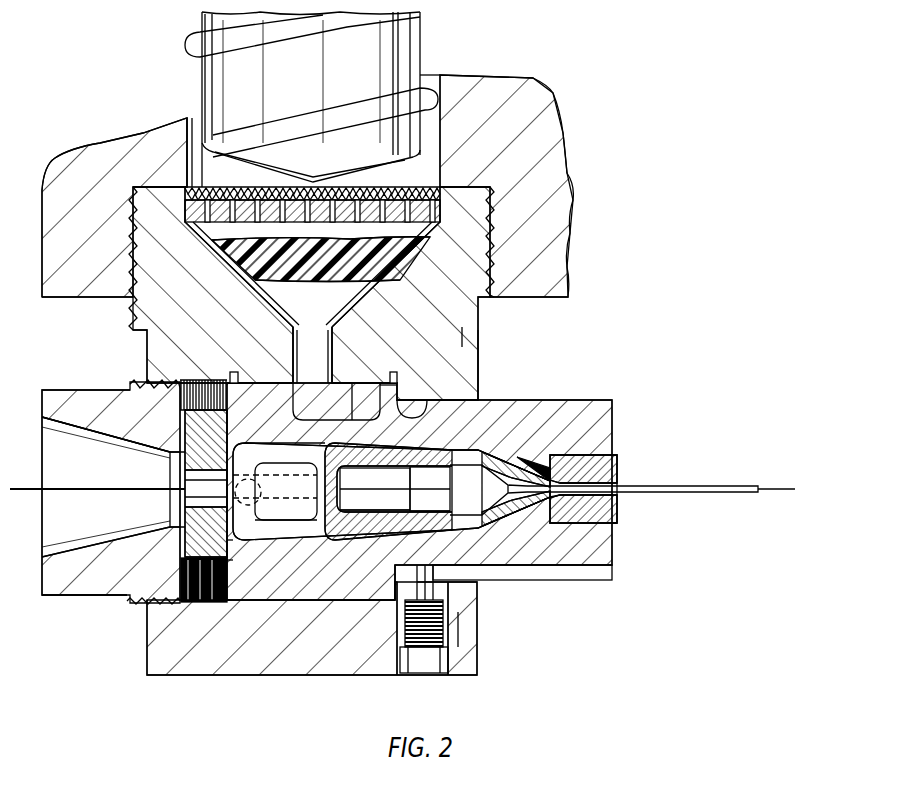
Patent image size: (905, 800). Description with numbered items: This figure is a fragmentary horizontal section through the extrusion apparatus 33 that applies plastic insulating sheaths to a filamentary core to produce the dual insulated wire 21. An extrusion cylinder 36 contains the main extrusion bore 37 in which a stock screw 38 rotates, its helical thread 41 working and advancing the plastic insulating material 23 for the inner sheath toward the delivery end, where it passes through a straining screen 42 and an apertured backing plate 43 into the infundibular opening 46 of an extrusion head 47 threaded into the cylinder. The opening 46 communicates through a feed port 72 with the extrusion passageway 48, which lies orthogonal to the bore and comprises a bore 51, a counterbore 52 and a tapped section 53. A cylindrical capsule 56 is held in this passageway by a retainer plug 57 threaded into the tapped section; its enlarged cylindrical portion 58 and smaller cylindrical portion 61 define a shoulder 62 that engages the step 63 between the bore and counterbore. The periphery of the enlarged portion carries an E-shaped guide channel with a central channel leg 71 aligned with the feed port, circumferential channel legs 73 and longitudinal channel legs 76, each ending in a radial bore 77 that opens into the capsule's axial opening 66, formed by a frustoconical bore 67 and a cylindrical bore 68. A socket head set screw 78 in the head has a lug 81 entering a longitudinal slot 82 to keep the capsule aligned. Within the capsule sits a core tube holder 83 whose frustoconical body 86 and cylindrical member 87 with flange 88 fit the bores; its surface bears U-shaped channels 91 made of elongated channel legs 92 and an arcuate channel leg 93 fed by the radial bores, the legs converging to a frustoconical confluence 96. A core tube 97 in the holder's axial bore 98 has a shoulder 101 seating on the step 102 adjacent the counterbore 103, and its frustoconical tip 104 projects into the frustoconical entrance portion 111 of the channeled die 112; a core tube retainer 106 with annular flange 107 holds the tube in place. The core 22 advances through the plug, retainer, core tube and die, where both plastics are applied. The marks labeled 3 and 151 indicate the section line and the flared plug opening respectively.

The dual insulated wire 21 is at (700, 484).
The filamentary conductive core 22 is at (53, 487).
The plastic insulating material for the inner sheath 23 is at (432, 240).
The section line 3 is at (466, 340).
The extrusion apparatus 33 is at (113, 673).
The extrusion cylinder 36 is at (141, 132).
The main extrusion bore 37 is at (190, 112).
The stock screw 38 is at (420, 37).
The helical thread 41 is at (190, 42).
The straining screen 42 is at (445, 190).
The apertured backing plate 43 is at (440, 210).
The infundibular opening 46 is at (275, 305).
The extrusion head 47 is at (147, 343).
The extrusion passageway 48 is at (478, 428).
The bore 51 is at (422, 405).
The counterbore 52 is at (252, 385).
The tapped section 53 is at (163, 380).
The capsule 56 is at (582, 405).
The retainer plug 57 is at (87, 392).
The enlarged cylindrical portion 58 is at (297, 655).
The smaller cylindrical portion 61 is at (606, 425).
The shoulder 62 is at (395, 385).
The step 63 is at (445, 400).
The axial opening 66 is at (463, 450).
The frustoconical bore 67 is at (533, 457).
The cylindrical bore 68 is at (265, 443).
The central channel leg 71 is at (308, 393).
The feed port 72 is at (291, 330).
The circumferential channel legs 73 is at (362, 385).
The longitudinal channel legs 76 is at (292, 522).
The radial bore 77 is at (245, 505).
The socket head set screw 78 is at (420, 665).
The lug 81 is at (435, 589).
The longitudinal slot 82 is at (580, 573).
The core tube holder 83 is at (355, 560).
The frustoconical body 86 is at (385, 560).
The cylindrical member 87 is at (262, 552).
The flange 88 is at (240, 545).
The U-shaped channels 91 is at (336, 401).
The elongated channel legs 92 is at (292, 452).
The arcuate channel leg 93 is at (260, 472).
The frustoconical confluence 96 is at (497, 457).
The core tube 97 is at (465, 532).
The axial bore 98 is at (470, 470).
The shoulder 101 is at (450, 475).
The step 102 is at (441, 504).
The counterbore 103 is at (362, 492).
The frustoconical tip 104 is at (505, 523).
The core tube retainer 106 is at (375, 495).
The annular flange 107 is at (185, 517).
The frustoconical entrance portion 111 is at (552, 455).
The channeled die 112 is at (620, 519).
The entrance taper 151 is at (57, 427).